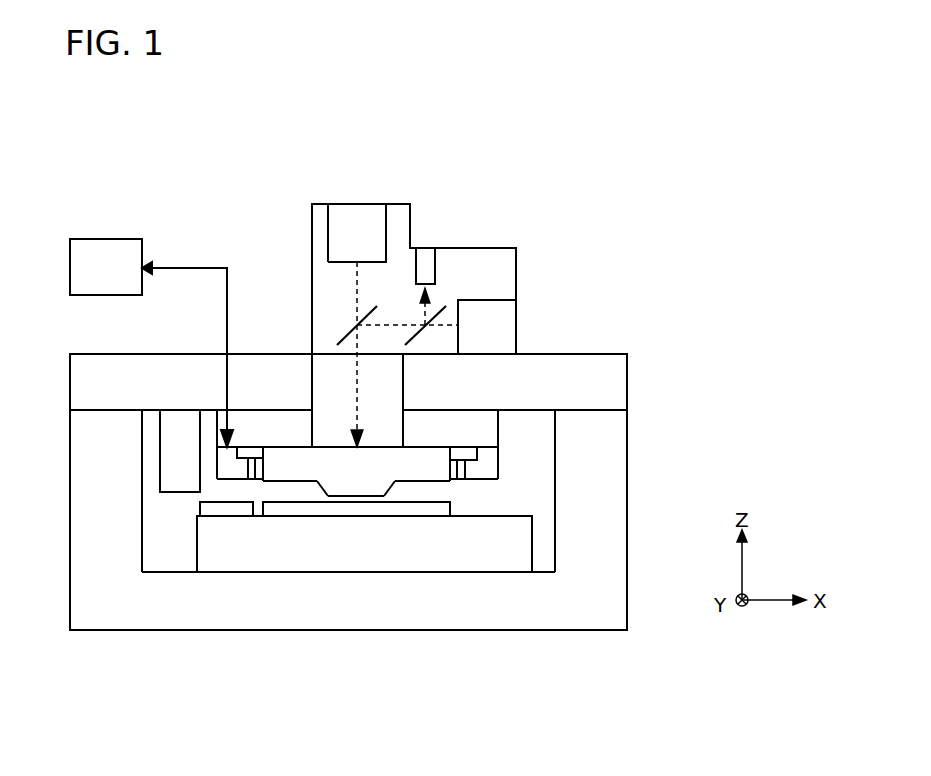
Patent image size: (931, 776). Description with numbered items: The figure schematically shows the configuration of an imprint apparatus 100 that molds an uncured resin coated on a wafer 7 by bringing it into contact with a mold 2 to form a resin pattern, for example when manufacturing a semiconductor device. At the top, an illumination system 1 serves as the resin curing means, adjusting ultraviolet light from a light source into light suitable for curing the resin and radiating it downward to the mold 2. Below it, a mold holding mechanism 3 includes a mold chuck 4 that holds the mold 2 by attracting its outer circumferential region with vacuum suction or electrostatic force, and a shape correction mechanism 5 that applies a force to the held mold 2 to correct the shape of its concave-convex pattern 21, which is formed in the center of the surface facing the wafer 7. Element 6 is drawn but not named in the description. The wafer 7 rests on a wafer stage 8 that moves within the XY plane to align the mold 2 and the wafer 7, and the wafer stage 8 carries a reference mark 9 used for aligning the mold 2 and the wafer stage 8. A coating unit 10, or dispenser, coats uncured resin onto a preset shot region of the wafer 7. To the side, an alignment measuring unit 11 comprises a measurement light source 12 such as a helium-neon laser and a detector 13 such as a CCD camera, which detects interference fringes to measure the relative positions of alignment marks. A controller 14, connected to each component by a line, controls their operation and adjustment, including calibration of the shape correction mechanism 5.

The imprint apparatus 100 is at (593, 170).
The illumination system 1 is at (328, 230).
The mold 2 is at (287, 483).
The mold holding mechanism 3 is at (503, 418).
The mold chuck 4 is at (483, 433).
The shape correction mechanism 5 is at (465, 479).
The pin 6 is at (462, 481).
The wafer 7 is at (333, 510).
The wafer stage 8 is at (392, 551).
The reference mark 9 is at (227, 512).
The coating unit 10 is at (172, 460).
The alignment measuring unit 11 is at (525, 240).
The measurement light source 12 is at (516, 330).
The detector 13 is at (435, 265).
The controller 14 is at (110, 238).
The concave-convex pattern 21 is at (375, 500).